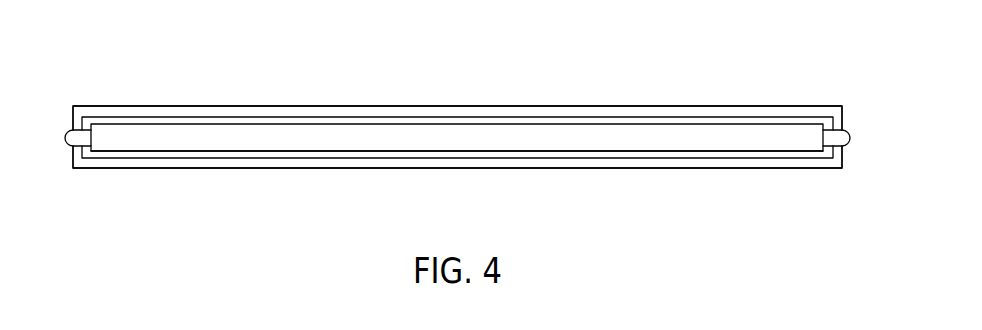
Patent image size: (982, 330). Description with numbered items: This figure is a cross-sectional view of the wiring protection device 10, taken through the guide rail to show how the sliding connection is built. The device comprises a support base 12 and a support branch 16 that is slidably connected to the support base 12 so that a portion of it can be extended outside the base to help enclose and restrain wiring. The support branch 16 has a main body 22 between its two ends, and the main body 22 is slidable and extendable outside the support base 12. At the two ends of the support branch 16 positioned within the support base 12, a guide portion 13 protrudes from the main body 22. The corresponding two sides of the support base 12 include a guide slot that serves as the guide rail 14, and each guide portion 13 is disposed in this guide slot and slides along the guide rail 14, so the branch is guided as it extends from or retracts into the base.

The wiring protection device 10 is at (768, 32).
The support base 12 is at (210, 105).
The guide portion 13 is at (67, 137).
The guide rail 14 is at (90, 118).
The support branch 16 is at (305, 152).
The main body 22 is at (613, 143).